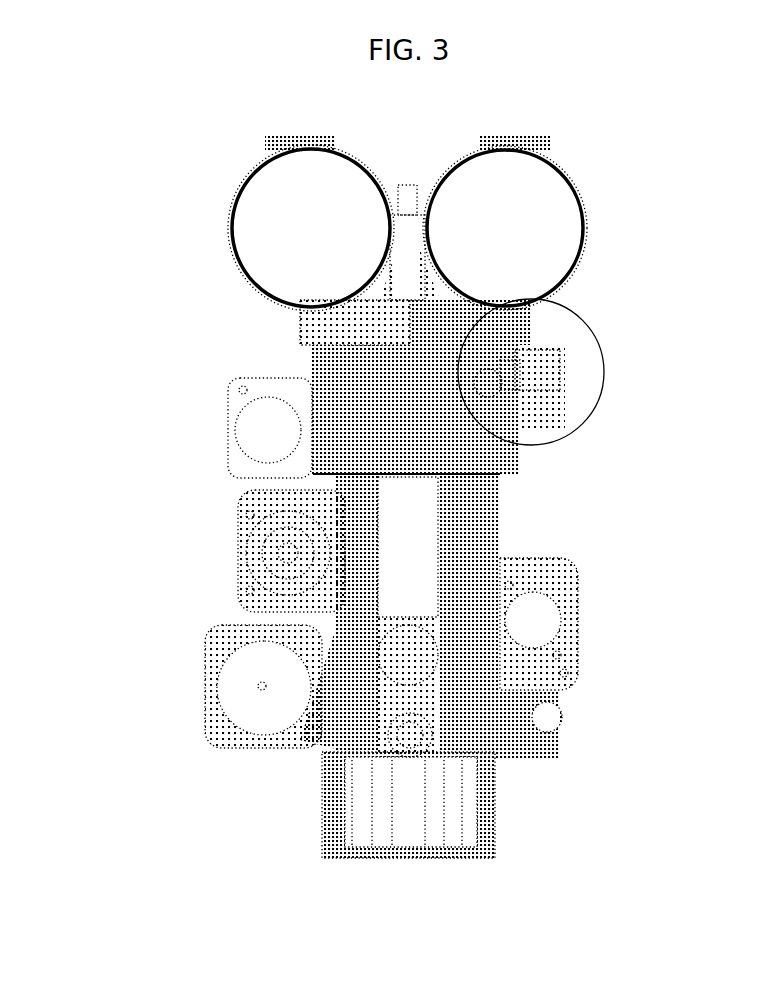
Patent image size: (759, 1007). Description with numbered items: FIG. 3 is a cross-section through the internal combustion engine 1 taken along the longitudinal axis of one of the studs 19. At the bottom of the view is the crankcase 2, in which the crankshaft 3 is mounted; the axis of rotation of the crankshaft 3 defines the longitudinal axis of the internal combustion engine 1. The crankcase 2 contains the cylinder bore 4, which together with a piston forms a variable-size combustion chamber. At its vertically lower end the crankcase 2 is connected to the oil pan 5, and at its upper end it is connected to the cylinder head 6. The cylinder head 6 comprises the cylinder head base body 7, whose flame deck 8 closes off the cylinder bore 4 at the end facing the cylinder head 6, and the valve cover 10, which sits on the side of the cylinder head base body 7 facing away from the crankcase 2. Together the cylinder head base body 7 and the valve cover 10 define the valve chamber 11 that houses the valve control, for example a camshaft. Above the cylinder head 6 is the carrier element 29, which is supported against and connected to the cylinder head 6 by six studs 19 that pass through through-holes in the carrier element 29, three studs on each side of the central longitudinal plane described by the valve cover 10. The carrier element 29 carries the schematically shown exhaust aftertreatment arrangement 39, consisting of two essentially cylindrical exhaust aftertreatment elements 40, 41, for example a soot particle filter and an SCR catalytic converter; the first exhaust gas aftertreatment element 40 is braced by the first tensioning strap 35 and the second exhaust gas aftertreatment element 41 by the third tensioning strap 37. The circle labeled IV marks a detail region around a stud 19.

The internal combustion engine 1 is at (178, 190).
The crankcase 2 is at (497, 663).
The crankshaft 3 is at (420, 738).
The cylinder bore 4 is at (380, 548).
The oil pan 5 is at (458, 815).
The cylinder head 6 is at (217, 392).
The cylinder head base body 7 is at (310, 432).
The flame deck 8 is at (442, 477).
The valve cover 10 is at (531, 348).
The valve chamber 11 is at (418, 368).
The studs 19 is at (510, 363).
The carrier element 29 is at (430, 309).
The first tensioning strap 35 is at (556, 168).
The third tensioning strap 37 is at (263, 160).
The exhaust aftertreatment arrangement 39 is at (562, 225).
The first exhaust gas aftertreatment element 40 is at (478, 207).
The second exhaust gas aftertreatment element 41 is at (270, 223).
The detail view IV is at (565, 432).